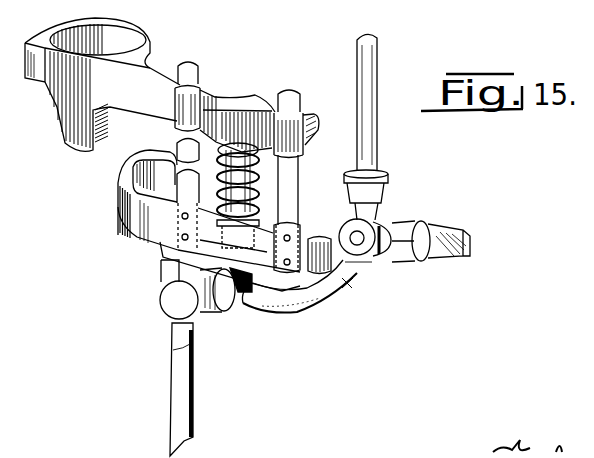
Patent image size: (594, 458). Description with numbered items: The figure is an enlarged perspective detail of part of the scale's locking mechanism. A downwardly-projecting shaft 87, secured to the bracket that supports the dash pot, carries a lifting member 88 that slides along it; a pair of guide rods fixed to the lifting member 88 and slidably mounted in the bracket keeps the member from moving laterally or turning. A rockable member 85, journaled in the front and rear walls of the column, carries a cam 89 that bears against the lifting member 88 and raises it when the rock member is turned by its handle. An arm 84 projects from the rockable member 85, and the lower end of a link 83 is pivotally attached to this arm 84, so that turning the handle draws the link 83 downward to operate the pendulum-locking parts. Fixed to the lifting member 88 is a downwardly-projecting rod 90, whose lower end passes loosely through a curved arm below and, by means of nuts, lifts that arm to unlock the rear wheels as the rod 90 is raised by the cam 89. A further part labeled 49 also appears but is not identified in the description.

The eye / pivot 49 is at (374, 221).
The link 83 is at (372, 63).
The arm 84 is at (352, 283).
The rockable member 85 is at (390, 266).
The shaft 87 is at (262, 182).
The lifting member 88 is at (142, 215).
The cam 89 is at (163, 278).
The rod 90 is at (183, 374).